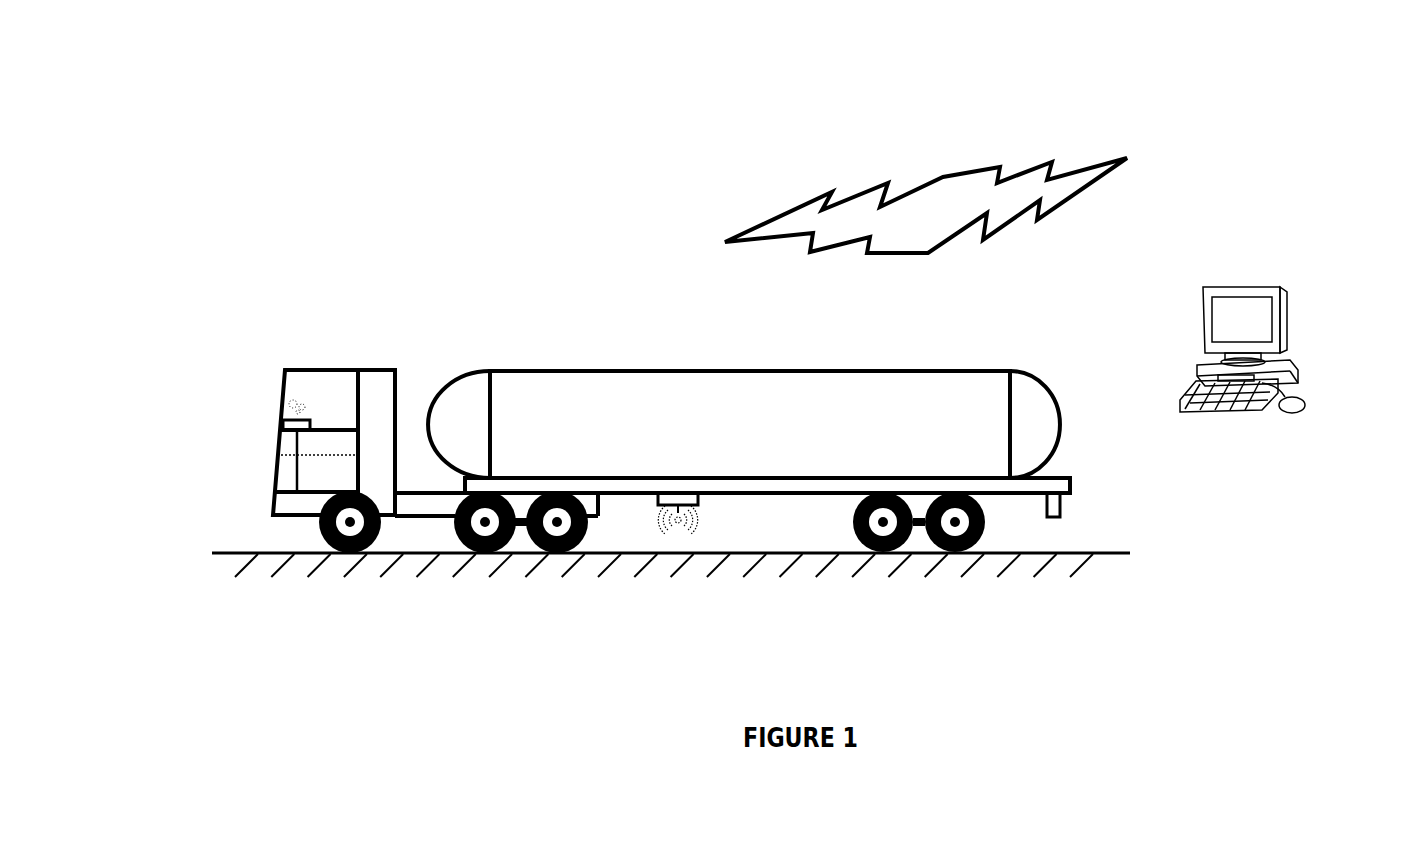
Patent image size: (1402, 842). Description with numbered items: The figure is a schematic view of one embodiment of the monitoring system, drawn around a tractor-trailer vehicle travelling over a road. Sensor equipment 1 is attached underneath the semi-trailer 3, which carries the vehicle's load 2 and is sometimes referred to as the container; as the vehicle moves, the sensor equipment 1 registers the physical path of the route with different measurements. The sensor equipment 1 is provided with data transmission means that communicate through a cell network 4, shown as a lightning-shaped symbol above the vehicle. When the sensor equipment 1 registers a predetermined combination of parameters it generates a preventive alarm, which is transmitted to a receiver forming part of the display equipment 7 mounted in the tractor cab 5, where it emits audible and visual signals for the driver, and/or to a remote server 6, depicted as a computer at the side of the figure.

The sensor equipment 1 is at (708, 516).
The load 2 is at (587, 418).
The semi-trailer 3 is at (750, 370).
The cell network 4 is at (923, 198).
The tractor cab 5 is at (345, 368).
The remote server 6 is at (1250, 287).
The display equipment 7 is at (283, 415).